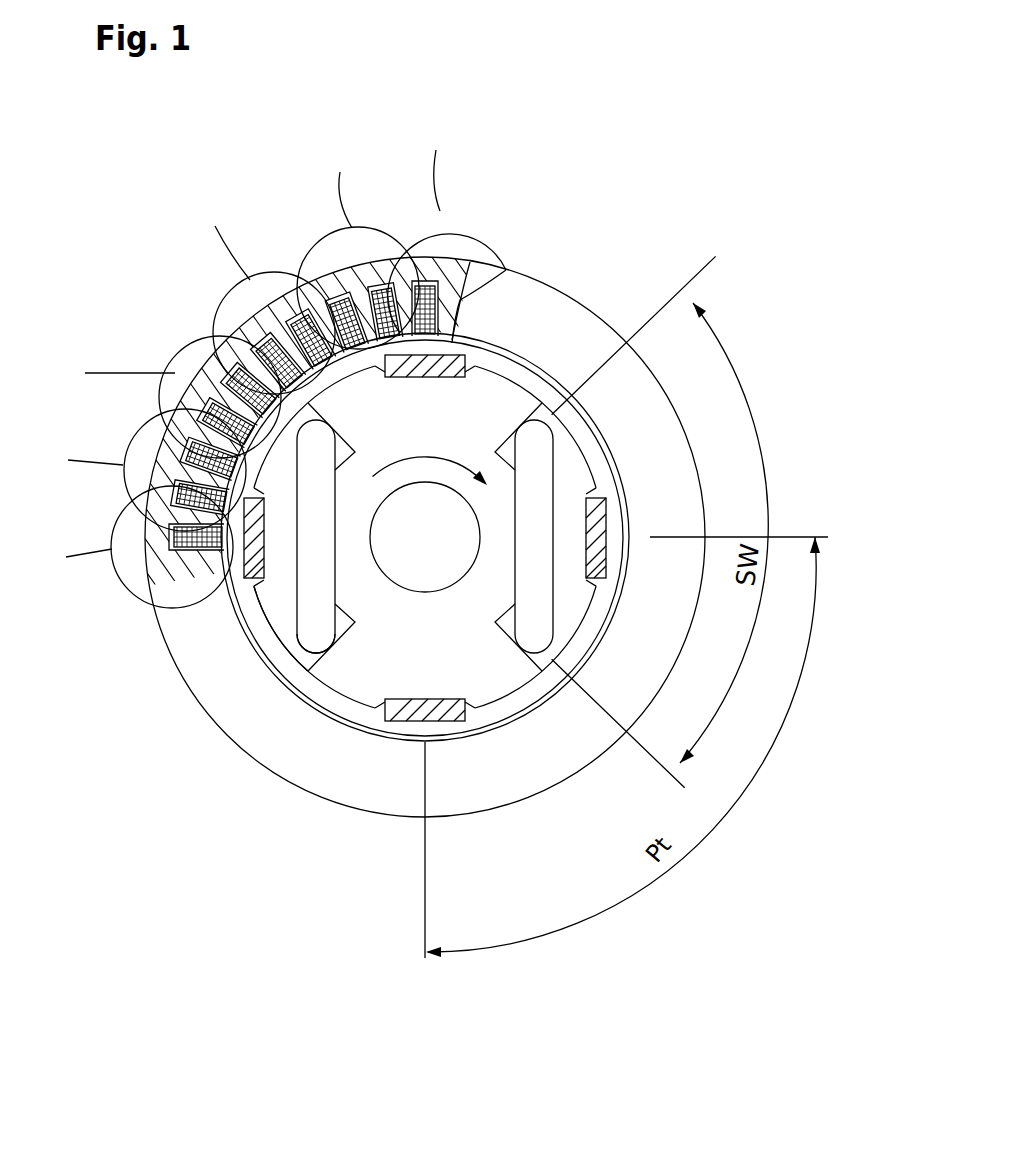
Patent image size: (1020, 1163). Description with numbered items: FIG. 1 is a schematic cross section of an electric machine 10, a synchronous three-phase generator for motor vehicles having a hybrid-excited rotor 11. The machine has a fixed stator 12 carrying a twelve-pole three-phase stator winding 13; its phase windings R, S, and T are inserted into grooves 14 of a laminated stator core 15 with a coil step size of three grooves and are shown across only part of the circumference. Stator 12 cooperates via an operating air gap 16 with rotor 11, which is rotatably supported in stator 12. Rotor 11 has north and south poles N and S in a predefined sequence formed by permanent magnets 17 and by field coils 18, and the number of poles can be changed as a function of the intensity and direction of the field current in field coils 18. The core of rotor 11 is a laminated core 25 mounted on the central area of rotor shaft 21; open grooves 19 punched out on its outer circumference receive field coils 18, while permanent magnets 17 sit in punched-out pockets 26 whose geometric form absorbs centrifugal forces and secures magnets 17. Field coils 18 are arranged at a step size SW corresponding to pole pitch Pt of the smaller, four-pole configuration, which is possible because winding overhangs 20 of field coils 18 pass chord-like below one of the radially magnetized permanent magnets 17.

The electric machine 10 is at (518, 226).
The hybrid-excited rotor 11 is at (493, 392).
The stator 12 is at (512, 290).
The stator winding 13 is at (270, 320).
The grooves 14 is at (227, 380).
The laminated stator core 15 is at (342, 282).
The operating air gap 16 is at (257, 628).
The permanent magnets 17 is at (384, 705).
The field coils 18 is at (278, 634).
The open grooves 19 is at (328, 632).
The winding overhangs 20 is at (312, 442).
The rotor shaft 21 is at (452, 568).
The laminated core 25 is at (568, 472).
The pockets 26 is at (617, 497).